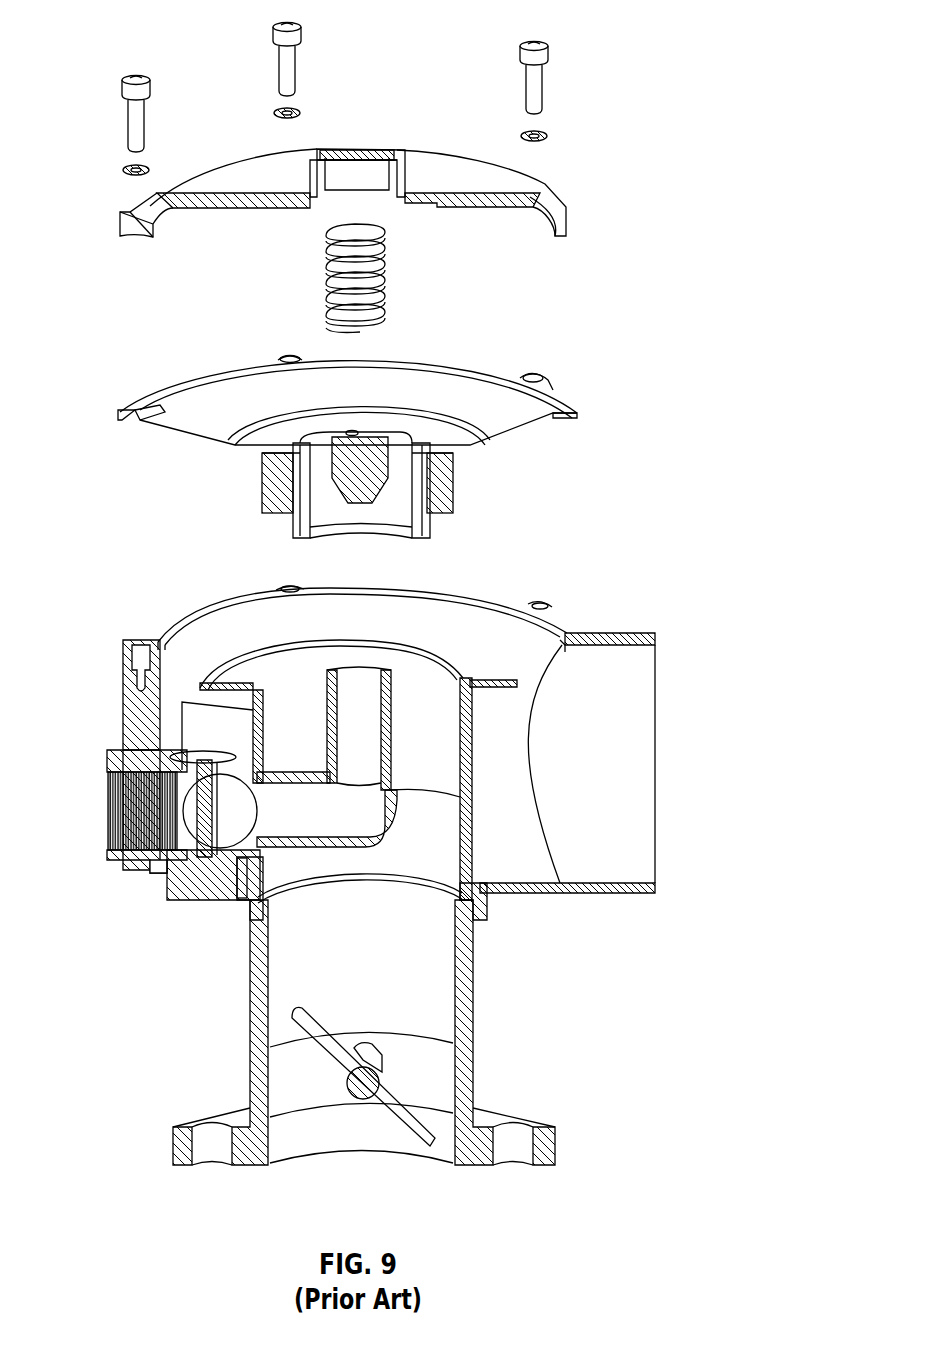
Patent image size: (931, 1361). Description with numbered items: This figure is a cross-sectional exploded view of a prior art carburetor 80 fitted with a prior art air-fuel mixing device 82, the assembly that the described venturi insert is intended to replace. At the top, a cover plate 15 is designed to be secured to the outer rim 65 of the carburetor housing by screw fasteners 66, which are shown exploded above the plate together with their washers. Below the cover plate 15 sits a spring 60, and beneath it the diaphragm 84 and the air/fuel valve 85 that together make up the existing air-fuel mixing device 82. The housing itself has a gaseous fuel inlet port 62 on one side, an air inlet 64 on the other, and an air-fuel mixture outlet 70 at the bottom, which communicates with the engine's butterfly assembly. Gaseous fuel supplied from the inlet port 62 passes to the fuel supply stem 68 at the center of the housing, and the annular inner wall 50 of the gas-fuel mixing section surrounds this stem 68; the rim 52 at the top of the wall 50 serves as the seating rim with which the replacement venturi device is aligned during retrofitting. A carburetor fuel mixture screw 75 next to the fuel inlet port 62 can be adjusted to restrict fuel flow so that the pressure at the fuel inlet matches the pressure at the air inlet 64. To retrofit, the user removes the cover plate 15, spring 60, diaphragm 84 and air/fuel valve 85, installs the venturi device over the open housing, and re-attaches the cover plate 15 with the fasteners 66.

The screw fasteners 66 is at (546, 92).
The cover plate 15 is at (455, 158).
The spring 60 is at (389, 306).
The prior art carburetor 80 is at (351, 594).
The diaphragm 84 is at (458, 385).
The prior art air-fuel mixing device 82 is at (390, 459).
The air/fuel valve 85 is at (385, 513).
The outer rim 65 is at (484, 596).
The seating rim 52 is at (437, 663).
The air inlet 64 is at (606, 638).
The fuel supply stem 68 is at (390, 734).
The annular inner wall 50 is at (351, 864).
The air-fuel mixture outlet 70 is at (410, 890).
The gaseous fuel inlet port 62 is at (103, 807).
The carburetor fuel mixture screw 75 is at (197, 870).